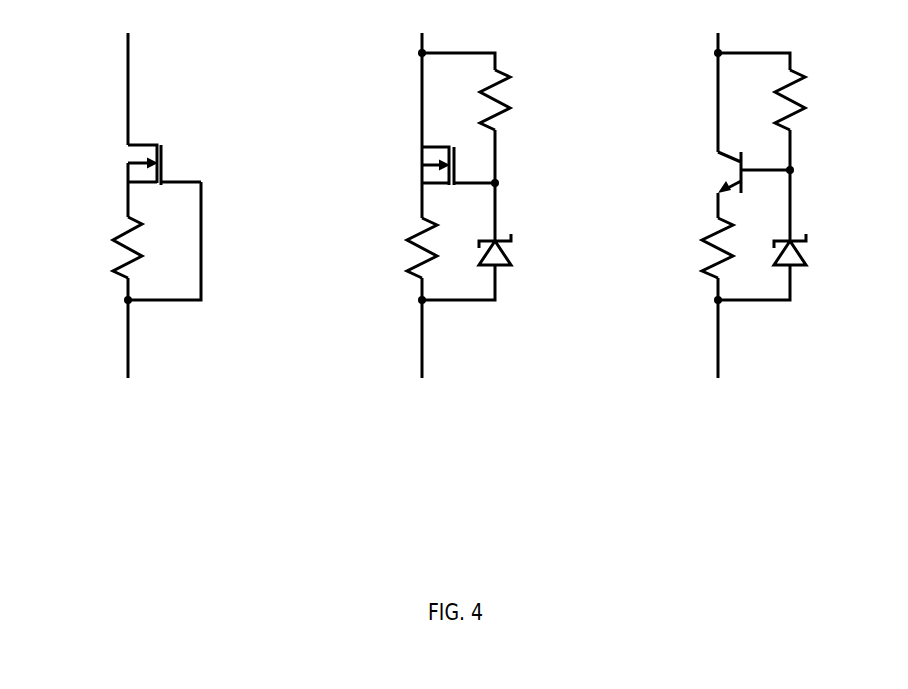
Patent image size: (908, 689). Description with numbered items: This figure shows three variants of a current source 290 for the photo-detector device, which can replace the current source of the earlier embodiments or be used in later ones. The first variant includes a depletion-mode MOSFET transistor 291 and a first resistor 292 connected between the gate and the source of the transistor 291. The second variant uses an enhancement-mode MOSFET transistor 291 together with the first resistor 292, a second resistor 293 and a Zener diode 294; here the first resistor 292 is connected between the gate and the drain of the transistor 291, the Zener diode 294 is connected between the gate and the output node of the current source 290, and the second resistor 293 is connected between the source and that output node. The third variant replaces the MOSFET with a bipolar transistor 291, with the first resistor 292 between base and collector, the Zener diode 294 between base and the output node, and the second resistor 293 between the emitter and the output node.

The current source 290 is at (444, 238).
The transistor 291 is at (414, 169).
The resistor R'1 292 is at (474, 186).
The resistor R'2 293 is at (533, 260).
The Zener diode D' 294 is at (681, 219).